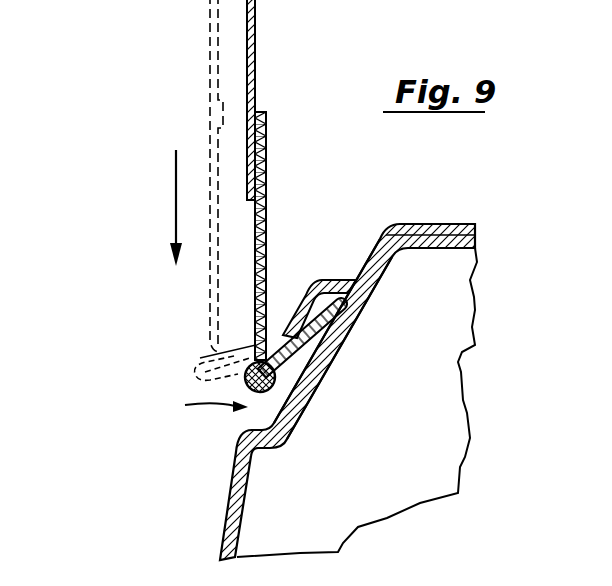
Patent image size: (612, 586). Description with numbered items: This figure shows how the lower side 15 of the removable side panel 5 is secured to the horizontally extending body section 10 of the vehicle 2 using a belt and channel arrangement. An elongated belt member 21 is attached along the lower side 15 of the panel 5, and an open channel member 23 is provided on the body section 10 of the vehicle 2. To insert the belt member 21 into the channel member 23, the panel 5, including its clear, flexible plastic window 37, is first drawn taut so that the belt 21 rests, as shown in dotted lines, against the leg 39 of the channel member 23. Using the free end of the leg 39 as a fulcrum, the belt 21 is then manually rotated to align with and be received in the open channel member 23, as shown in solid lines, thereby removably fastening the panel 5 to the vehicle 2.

The side panel 5 is at (180, 70).
The window 37 is at (254, 58).
The lower side 15 is at (266, 213).
The open channel member 23 is at (324, 268).
The leg 39 is at (294, 336).
The belt member 21 is at (347, 340).
The vehicle 2 is at (410, 442).
The horizontally extending body section 10 is at (230, 495).